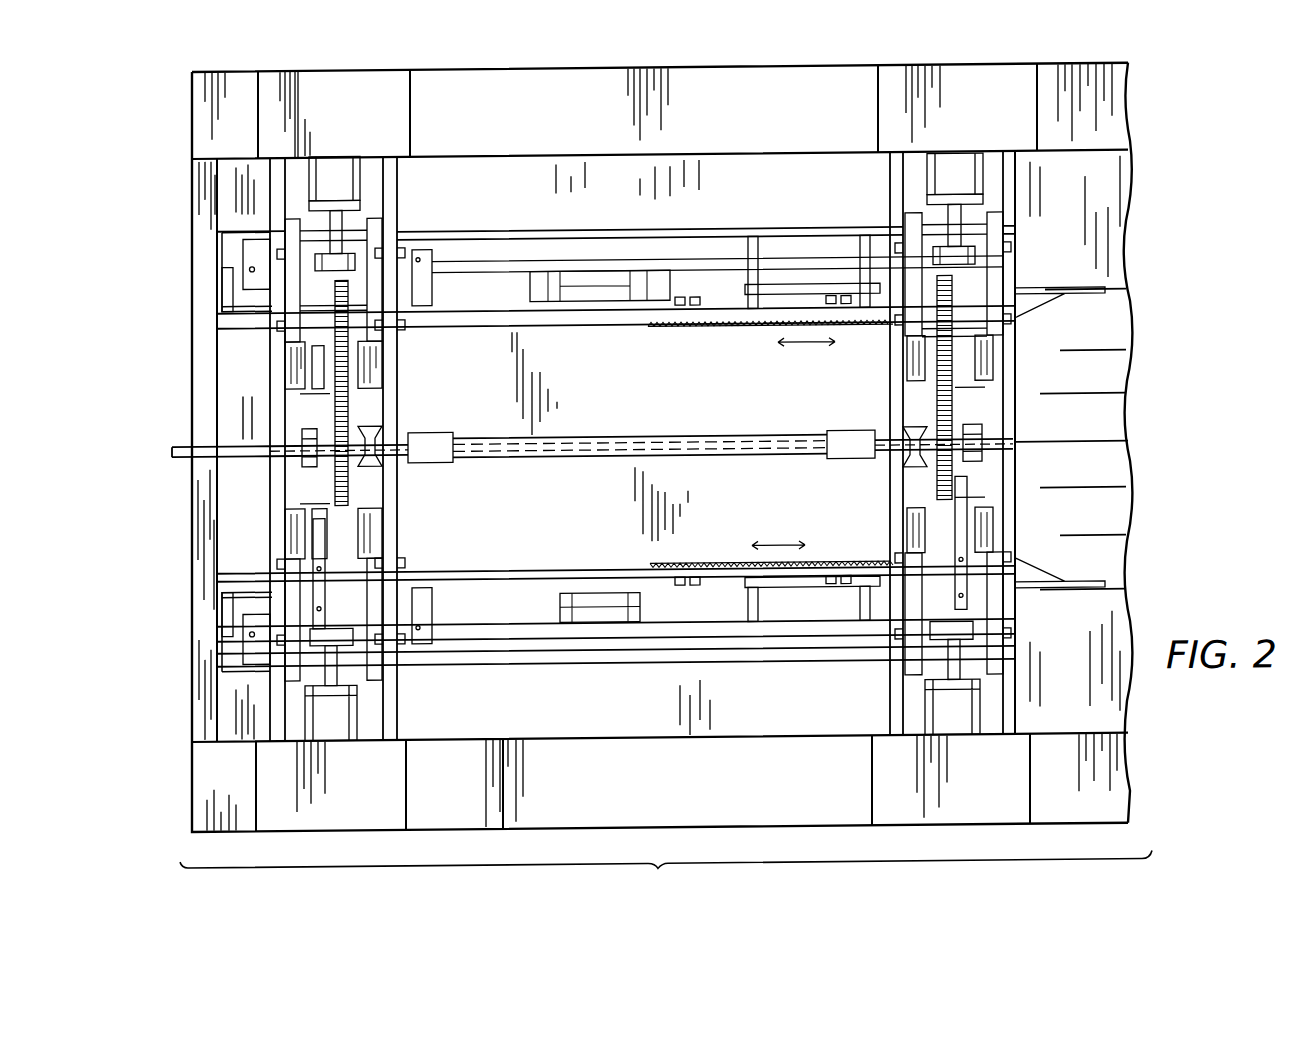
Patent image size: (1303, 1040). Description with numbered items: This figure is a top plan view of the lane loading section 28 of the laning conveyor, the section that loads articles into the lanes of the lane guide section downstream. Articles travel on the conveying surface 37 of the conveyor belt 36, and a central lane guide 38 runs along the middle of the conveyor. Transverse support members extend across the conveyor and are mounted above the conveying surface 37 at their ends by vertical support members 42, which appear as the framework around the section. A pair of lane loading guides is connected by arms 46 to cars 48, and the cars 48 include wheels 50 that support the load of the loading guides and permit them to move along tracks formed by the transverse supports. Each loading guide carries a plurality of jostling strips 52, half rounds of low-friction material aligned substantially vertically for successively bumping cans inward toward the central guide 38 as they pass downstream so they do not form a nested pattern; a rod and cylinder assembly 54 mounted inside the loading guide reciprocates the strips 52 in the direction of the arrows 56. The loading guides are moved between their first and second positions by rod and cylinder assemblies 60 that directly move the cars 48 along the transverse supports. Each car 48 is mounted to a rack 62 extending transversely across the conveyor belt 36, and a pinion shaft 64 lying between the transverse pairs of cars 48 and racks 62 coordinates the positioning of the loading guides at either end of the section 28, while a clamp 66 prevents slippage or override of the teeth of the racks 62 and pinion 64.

The lane loading section 28 is at (655, 869).
The conveyor belt 36 is at (210, 190).
The conveying surface 37 is at (248, 388).
The central lane guide 38 is at (180, 457).
The vertical support members 42 is at (368, 87).
The arms 46 is at (343, 263).
The cars 48 is at (313, 304).
The wheels 50 is at (353, 262).
The jostling strips 52 is at (745, 336).
The rod and cylinder assembly 54 is at (605, 287).
The arrows 56 is at (800, 351).
The rod and cylinder assemblies 60 is at (330, 176).
The rack 62 is at (345, 407).
The pinion shaft 64 is at (530, 458).
The clamp 66 is at (300, 443).